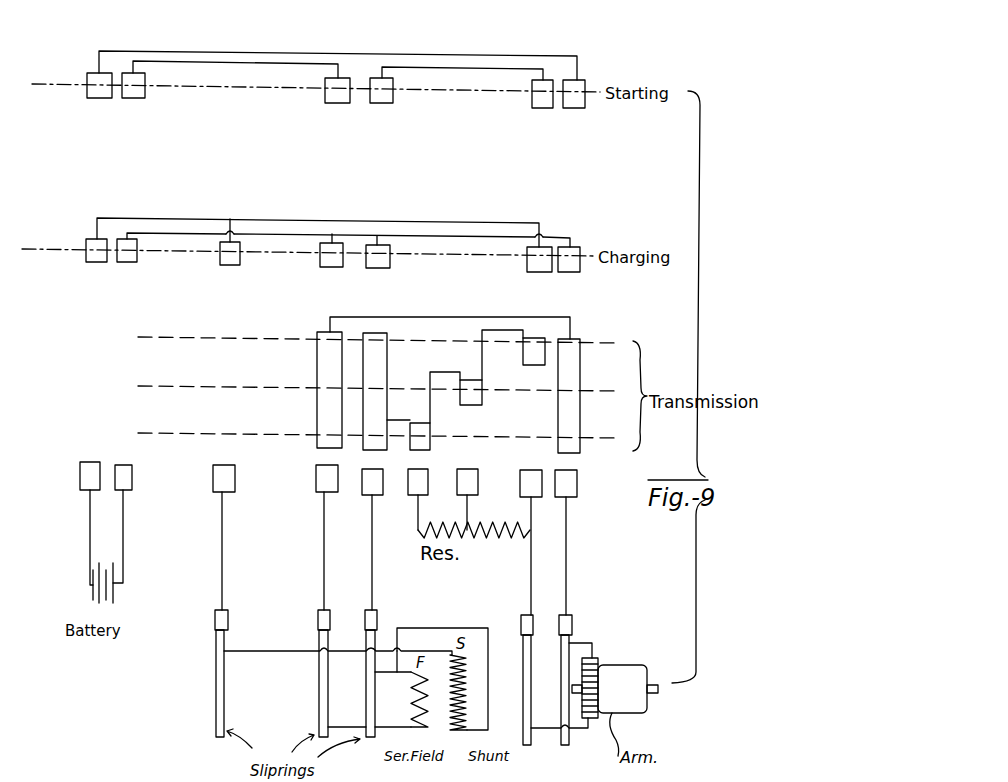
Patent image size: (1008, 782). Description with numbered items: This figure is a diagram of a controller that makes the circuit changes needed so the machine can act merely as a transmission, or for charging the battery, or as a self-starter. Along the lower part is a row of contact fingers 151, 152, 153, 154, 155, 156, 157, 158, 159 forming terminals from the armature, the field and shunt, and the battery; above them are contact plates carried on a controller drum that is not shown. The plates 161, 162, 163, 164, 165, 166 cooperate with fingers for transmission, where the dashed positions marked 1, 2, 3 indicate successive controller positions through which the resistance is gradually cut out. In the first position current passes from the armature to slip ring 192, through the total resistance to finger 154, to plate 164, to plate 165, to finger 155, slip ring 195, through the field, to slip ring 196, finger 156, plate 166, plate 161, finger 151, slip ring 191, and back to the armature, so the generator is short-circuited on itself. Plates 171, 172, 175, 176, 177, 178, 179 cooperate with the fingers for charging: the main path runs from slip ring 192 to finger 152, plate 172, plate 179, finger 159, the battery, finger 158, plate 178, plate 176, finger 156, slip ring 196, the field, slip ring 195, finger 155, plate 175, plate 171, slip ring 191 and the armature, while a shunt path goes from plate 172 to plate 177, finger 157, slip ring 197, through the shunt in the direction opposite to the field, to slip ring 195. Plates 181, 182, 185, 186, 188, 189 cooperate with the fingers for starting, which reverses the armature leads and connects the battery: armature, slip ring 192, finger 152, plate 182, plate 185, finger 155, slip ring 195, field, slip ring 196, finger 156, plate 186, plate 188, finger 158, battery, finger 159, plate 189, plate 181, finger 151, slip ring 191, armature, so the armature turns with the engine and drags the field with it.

The first speed position line 1 is at (368, 434).
The second speed position line 2 is at (368, 387).
The third speed position line 3 is at (368, 339).
The contact finger 151 is at (572, 497).
The contact finger 152 is at (536, 497).
The contact finger 153 is at (477, 499).
The contact finger 154 is at (424, 495).
The contact finger 155 is at (378, 495).
The contact finger 156 is at (331, 492).
The contact finger 157 is at (230, 492).
The contact finger 158 is at (128, 490).
The contact finger 159 is at (86, 490).
The contact plate 161 is at (580, 373).
The contact plate 162 is at (534, 365).
The contact plate 163 is at (470, 405).
The contact plate 164 is at (430, 432).
The contact plate 165 is at (387, 359).
The contact plate 166 is at (317, 374).
The contact plate 171 is at (570, 272).
The contact plate 172 is at (538, 272).
The contact plate 175 is at (378, 268).
The contact plate 176 is at (331, 267).
The contact plate 177 is at (231, 265).
The contact plate 178 is at (129, 262).
The contact plate 179 is at (99, 262).
The contact plate 181 is at (576, 108).
The contact plate 182 is at (545, 108).
The contact plate 185 is at (382, 103).
The contact plate 186 is at (338, 103).
The contact plate 188 is at (134, 98).
The contact plate 189 is at (101, 98).
The slip ring 191 is at (561, 684).
The slip ring 192 is at (523, 680).
The slip ring 195 is at (375, 690).
The slip ring 196 is at (328, 688).
The slip ring 197 is at (224, 678).